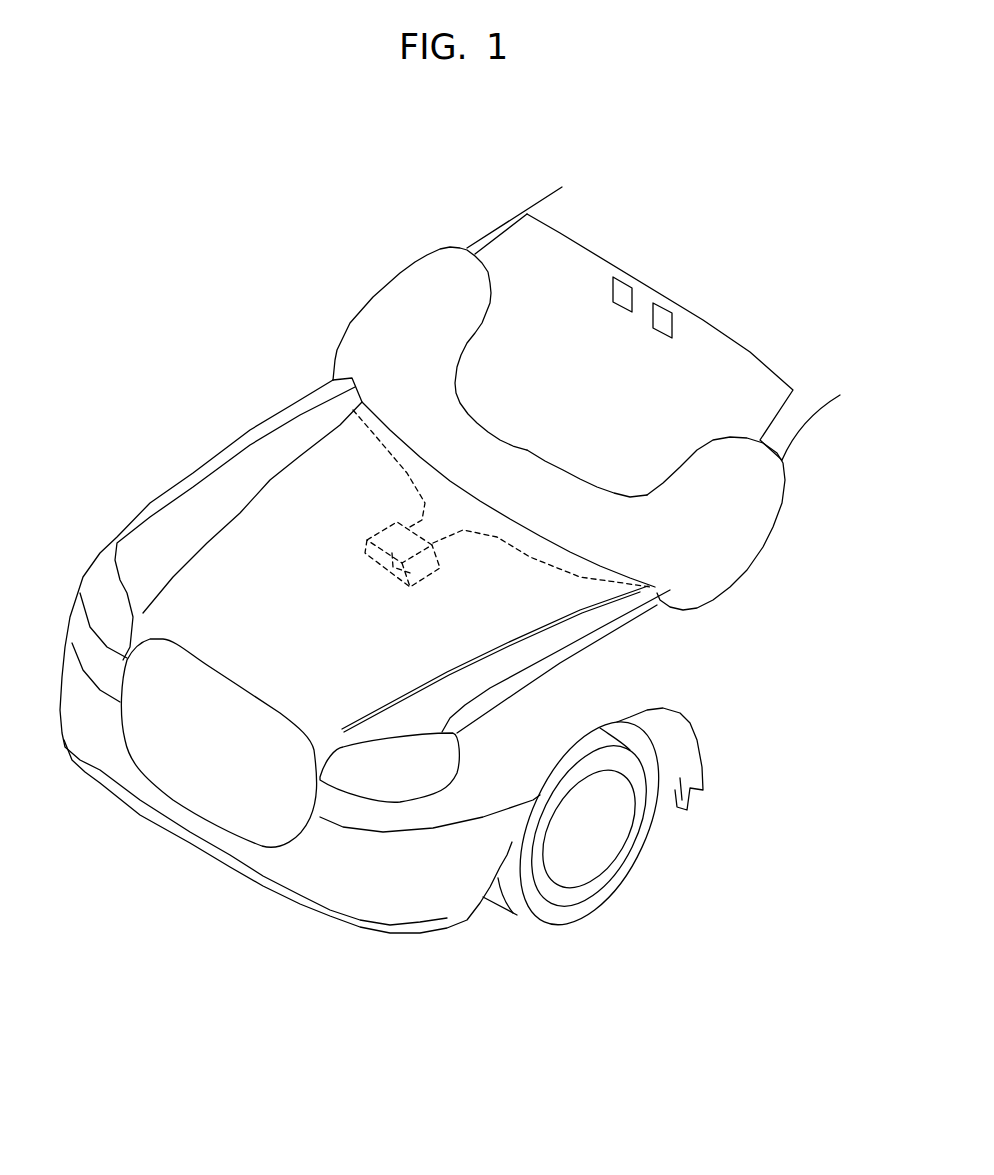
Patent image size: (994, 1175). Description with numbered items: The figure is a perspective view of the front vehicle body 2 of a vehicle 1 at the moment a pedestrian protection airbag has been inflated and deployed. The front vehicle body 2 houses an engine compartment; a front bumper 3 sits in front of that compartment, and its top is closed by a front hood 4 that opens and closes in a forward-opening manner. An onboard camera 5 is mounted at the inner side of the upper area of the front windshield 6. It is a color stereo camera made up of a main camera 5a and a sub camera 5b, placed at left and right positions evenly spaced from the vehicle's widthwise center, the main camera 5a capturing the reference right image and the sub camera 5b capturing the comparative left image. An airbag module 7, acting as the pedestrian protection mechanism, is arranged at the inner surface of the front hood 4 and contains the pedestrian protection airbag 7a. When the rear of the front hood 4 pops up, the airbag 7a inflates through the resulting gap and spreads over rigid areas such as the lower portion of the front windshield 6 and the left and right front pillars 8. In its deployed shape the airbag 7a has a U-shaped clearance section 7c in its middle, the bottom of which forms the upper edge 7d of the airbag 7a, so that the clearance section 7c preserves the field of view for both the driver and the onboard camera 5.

The vehicle 1 is at (429, 222).
The front vehicle body 2 is at (259, 398).
The front bumper 3 is at (373, 915).
The front hood 4 is at (172, 533).
The onboard camera 5 is at (619, 340).
The main camera 5a is at (620, 307).
The sub camera 5b is at (647, 340).
The front windshield 6 is at (733, 363).
The airbag module 7 is at (548, 443).
The pedestrian protection airbag 7a is at (383, 323).
The U-shaped clearance section 7c is at (558, 410).
The upper edge 7d is at (568, 470).
The front pillars 8 is at (497, 231).